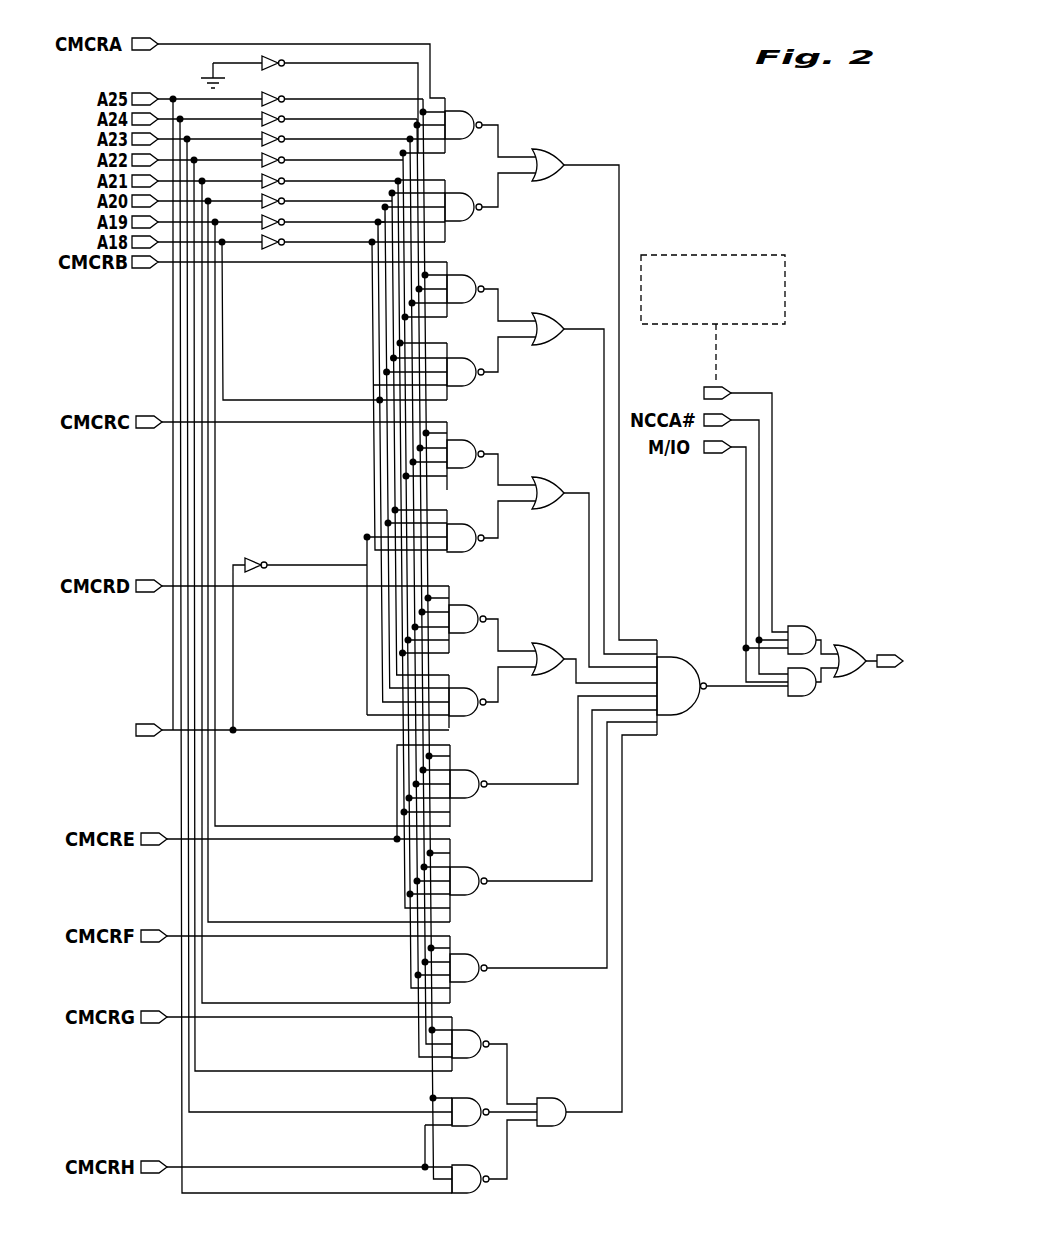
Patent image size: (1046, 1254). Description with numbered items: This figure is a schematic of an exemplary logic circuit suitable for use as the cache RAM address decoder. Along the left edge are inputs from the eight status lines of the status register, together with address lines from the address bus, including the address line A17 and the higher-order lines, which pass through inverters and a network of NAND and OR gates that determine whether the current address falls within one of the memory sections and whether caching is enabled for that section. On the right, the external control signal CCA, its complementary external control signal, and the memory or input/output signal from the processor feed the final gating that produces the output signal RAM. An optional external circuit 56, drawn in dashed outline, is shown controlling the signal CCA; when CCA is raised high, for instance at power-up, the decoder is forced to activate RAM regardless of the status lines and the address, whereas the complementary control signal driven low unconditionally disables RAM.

The external circuit 56 is at (733, 254).
The external control signal CCA is at (718, 506).
The output signal RAM is at (871, 648).
The address line A17 is at (274, 639).